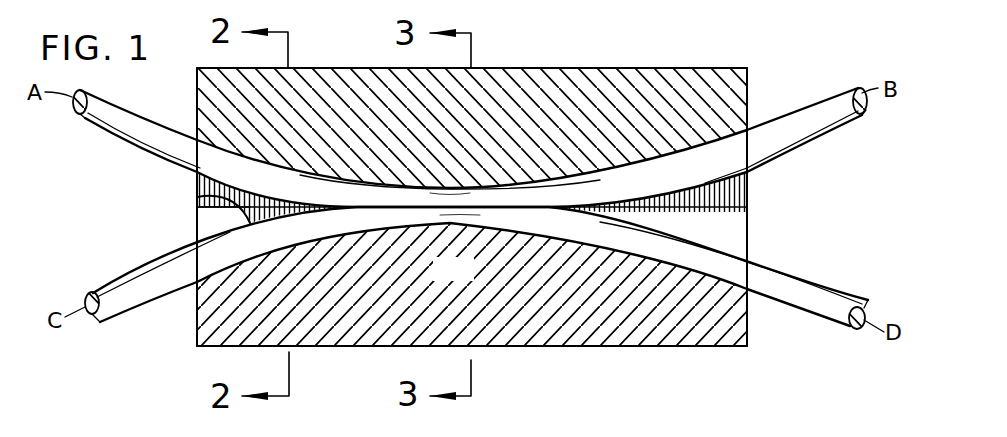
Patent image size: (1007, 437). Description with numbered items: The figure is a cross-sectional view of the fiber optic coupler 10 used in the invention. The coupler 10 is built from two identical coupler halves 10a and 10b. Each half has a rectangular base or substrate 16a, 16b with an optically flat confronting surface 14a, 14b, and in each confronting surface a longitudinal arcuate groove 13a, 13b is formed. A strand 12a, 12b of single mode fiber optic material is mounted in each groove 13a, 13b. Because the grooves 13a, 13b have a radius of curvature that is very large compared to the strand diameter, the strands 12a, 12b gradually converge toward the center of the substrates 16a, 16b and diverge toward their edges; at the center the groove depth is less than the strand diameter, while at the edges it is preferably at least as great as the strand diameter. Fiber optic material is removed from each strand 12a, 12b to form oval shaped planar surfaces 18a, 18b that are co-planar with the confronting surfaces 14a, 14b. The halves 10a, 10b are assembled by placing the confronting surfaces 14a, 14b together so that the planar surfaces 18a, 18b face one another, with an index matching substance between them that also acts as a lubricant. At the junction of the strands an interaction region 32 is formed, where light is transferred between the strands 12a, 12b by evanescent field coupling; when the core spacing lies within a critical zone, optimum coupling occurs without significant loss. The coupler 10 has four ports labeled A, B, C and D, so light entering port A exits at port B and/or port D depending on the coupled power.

The coupler 10 is at (661, 67).
The coupler half 10a is at (748, 108).
The coupler half 10b is at (748, 318).
The strand 12a is at (118, 111).
The strand 12b is at (180, 285).
The arcuate groove 13a is at (200, 181).
The arcuate groove 13b is at (730, 230).
The confronting surface 14a is at (247, 212).
The confronting surface 14b is at (240, 208).
The substrate 16a is at (575, 68).
The substrate 16b is at (610, 346).
The planar surface 18a is at (455, 212).
The planar surface 18b is at (470, 203).
The interaction region 32 is at (432, 197).